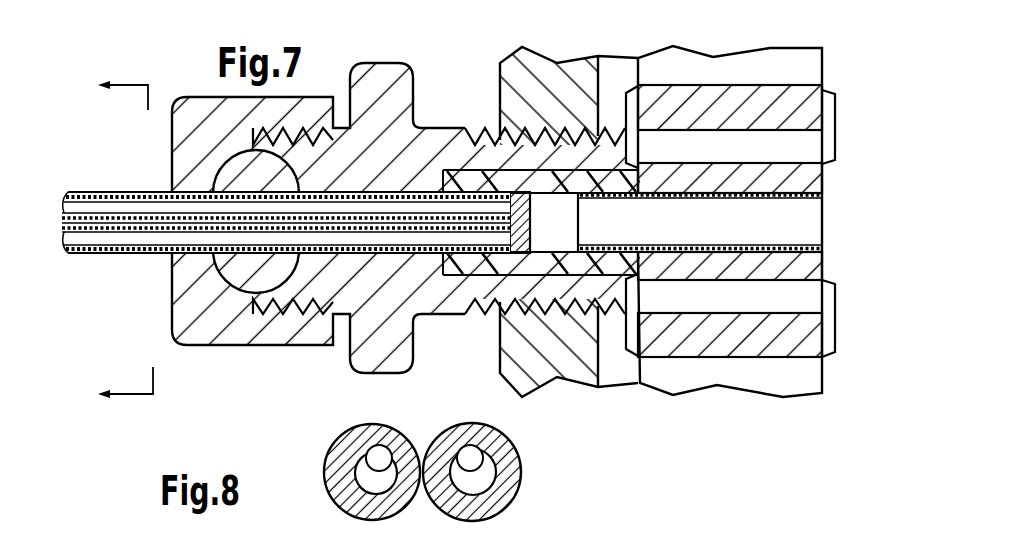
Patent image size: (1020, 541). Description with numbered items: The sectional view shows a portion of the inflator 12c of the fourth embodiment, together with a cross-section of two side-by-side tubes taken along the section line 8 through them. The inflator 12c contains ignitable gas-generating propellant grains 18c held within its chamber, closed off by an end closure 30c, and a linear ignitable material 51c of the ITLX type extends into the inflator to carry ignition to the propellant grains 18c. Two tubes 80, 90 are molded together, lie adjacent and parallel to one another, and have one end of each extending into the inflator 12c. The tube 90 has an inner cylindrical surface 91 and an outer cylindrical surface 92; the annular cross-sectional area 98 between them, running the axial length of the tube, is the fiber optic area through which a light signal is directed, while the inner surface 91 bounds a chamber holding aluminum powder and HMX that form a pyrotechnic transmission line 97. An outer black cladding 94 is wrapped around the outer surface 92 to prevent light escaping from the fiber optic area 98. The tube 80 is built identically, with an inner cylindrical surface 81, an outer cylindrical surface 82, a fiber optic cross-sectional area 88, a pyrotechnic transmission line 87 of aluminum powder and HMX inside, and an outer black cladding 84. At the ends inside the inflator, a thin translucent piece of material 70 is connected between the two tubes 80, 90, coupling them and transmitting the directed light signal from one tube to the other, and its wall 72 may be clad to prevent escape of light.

In FIG. 7, the inflator 12c is at (156, 56).
In FIG. 7, the section line 8— 8 is at (117, 239).
In FIG. 7, the propellant grains 18c is at (790, 102).
In FIG. 7, the end closure 30c is at (532, 100).
In FIG. 7, the ignitable material 51c is at (770, 198).
In FIG. 7, the translucent piece of material 70 is at (512, 252).
In FIG. 7, the wall 72 is at (532, 224).
In FIG. 7, the tube 80 is at (284, 283).
In FIG. 8, the tube 80 is at (335, 465).
In FIG. 8, the inner cylindrical surface 81 is at (393, 446).
In FIG. 8, the outer cylindrical surface 82 is at (348, 443).
In FIG. 8, the outer black cladding 84 is at (333, 500).
In FIG. 7, the pyrotechnic transmission line 87 is at (137, 237).
In FIG. 8, the pyrotechnic transmission line 87 is at (368, 478).
In FIG. 7, the cross-sectional area 88 is at (155, 250).
In FIG. 8, the cross-sectional area 88 is at (350, 445).
In FIG. 7, the tube 90 is at (275, 162).
In FIG. 8, the tube 90 is at (543, 461).
In FIG. 8, the inner cylindrical surface 91 is at (455, 452).
In FIG. 8, the outer cylindrical surface 92 is at (500, 433).
In FIG. 8, the outer black cladding 94 is at (518, 502).
In FIG. 7, the pyrotechnic transmission line 97 is at (93, 210).
In FIG. 8, the pyrotechnic transmission line 97 is at (478, 478).
In FIG. 7, the cross-sectional area 98 is at (153, 192).
In FIG. 8, the cross-sectional area 98 is at (500, 443).